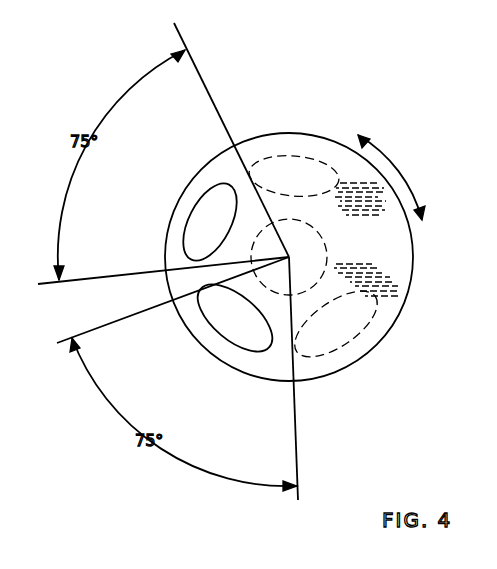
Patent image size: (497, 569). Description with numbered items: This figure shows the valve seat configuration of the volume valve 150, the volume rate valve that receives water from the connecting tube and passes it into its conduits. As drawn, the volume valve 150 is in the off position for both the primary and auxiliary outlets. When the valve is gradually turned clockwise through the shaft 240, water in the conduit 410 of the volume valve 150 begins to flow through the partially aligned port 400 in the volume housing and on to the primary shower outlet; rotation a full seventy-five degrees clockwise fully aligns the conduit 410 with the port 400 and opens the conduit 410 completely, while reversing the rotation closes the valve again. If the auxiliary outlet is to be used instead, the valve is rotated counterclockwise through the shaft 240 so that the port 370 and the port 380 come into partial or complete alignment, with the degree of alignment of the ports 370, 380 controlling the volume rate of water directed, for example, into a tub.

The volume valve 150 is at (412, 262).
The shaft 240 is at (323, 244).
The port 370 is at (230, 333).
The port 380 is at (352, 338).
The port 400 is at (301, 157).
The conduit 410 is at (204, 212).